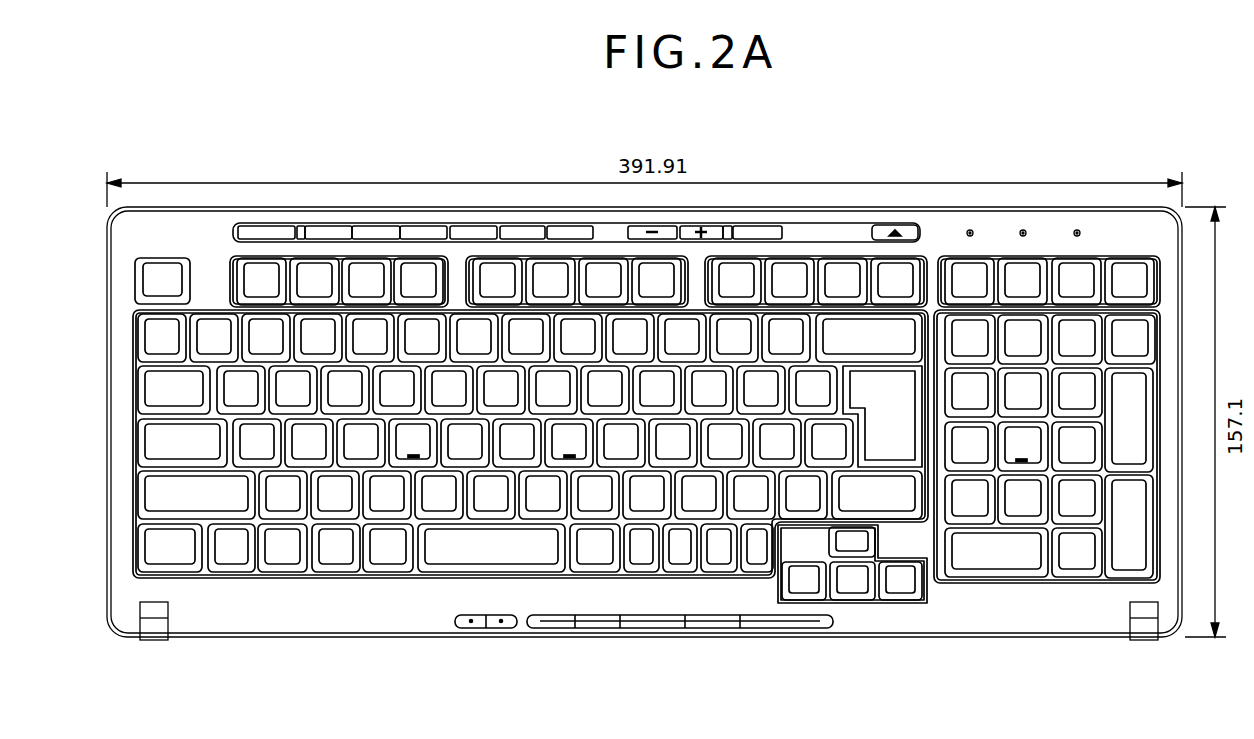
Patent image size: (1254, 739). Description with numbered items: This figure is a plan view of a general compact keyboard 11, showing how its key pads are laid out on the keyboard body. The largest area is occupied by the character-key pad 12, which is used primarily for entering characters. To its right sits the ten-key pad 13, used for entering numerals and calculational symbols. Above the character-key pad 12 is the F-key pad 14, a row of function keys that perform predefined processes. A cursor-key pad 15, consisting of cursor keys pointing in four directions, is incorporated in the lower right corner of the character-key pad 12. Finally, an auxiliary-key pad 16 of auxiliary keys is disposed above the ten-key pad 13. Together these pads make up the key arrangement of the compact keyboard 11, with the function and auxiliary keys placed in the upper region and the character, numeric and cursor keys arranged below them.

The compact keyboard 11 is at (298, 650).
The character-key pad 12 is at (397, 580).
The ten-key pad 13 is at (1047, 585).
The F-key pad 14 is at (228, 277).
The cursor-key pad 15 is at (860, 607).
The auxiliary-key pad 16 is at (1130, 258).